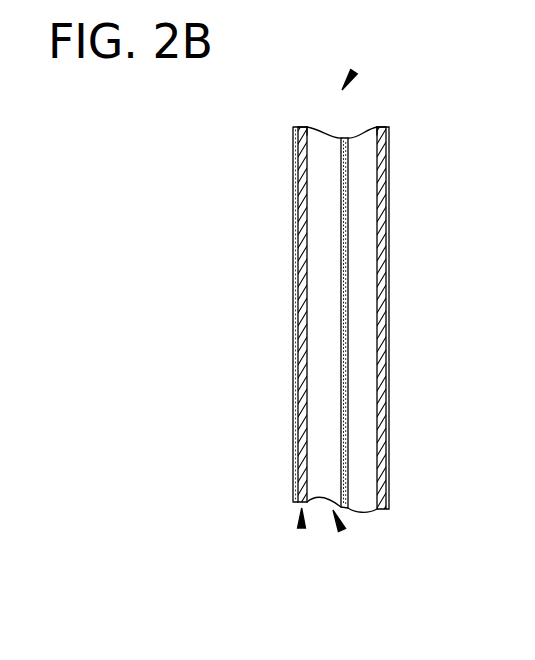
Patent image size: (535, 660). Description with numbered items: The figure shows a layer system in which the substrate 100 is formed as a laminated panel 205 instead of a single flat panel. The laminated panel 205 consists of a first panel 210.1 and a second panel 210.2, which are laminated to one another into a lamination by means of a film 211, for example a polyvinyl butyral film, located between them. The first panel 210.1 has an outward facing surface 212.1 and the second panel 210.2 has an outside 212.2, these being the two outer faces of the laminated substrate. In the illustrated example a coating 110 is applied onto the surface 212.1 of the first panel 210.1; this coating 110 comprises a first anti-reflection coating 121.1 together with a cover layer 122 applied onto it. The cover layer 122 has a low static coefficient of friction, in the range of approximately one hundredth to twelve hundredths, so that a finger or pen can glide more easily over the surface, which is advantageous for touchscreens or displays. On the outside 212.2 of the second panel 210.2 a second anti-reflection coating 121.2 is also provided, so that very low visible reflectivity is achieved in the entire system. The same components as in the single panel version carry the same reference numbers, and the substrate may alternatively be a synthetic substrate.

The substrate 100 is at (342, 273).
The coating 110 is at (300, 528).
The laminated panel 205 is at (342, 532).
The first panel 210.1 is at (325, 160).
The second panel 210.2 is at (372, 163).
The film 211 is at (348, 205).
The outward facing surface of first panel 212.1 is at (305, 127).
The outside of second panel 212.2 is at (378, 127).
The first anti-reflection coating 121.1 is at (304, 452).
The second anti-reflection coating 121.2 is at (382, 467).
The cover layer 122 is at (294, 373).